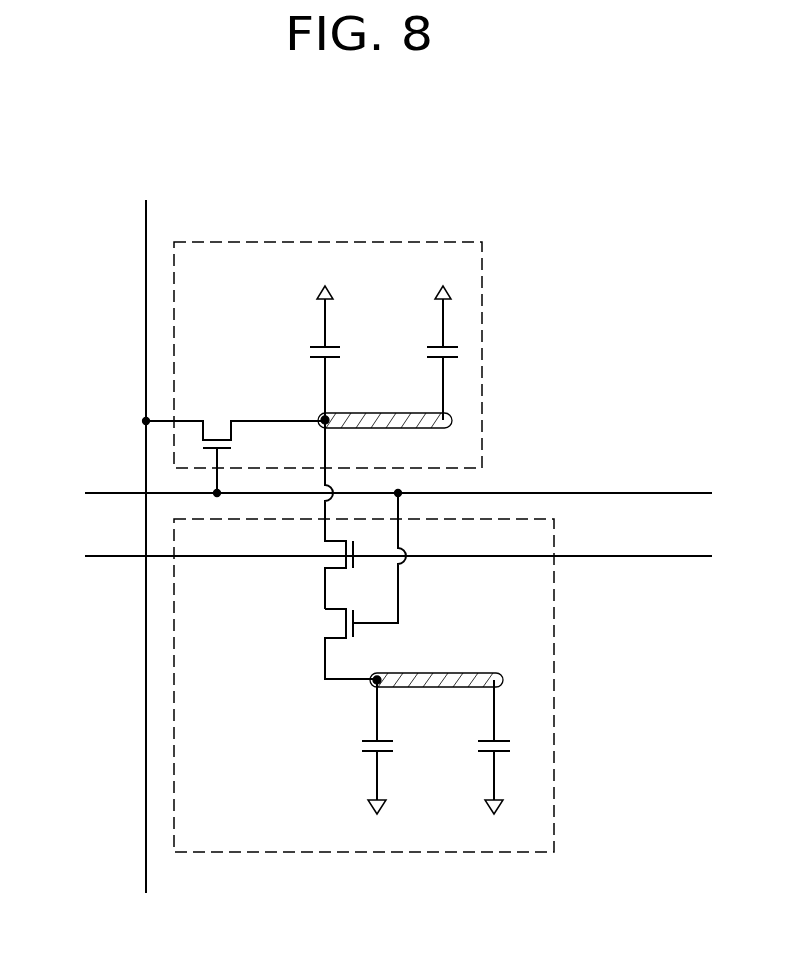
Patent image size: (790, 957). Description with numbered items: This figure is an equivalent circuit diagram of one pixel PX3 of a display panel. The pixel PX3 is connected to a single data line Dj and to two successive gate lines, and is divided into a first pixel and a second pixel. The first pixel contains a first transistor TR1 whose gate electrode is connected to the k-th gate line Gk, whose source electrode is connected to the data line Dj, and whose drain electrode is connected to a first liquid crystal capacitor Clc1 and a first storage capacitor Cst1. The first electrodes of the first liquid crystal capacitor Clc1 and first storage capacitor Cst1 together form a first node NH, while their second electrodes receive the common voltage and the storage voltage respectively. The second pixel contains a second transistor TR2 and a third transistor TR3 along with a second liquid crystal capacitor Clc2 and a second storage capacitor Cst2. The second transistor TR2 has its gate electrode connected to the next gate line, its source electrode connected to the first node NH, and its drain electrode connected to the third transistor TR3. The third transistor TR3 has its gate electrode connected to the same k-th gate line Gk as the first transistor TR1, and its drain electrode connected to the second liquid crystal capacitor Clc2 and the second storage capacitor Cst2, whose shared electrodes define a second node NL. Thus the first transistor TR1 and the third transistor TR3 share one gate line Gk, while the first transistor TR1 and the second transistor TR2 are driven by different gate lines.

The pixel PX3 is at (415, 483).
The data line Dj is at (144, 535).
The k-th gate line Gk is at (382, 494).
The first transistor TR1 is at (236, 435).
The second transistor TR2 is at (317, 562).
The third transistor TR3 is at (362, 634).
The first node NH is at (385, 435).
The second node NL is at (436, 695).
The first liquid crystal capacitor Clc1 is at (302, 336).
The first storage capacitor Cst1 is at (418, 336).
The second liquid crystal capacitor Clc2 is at (354, 761).
The second storage capacitor Cst2 is at (470, 761).